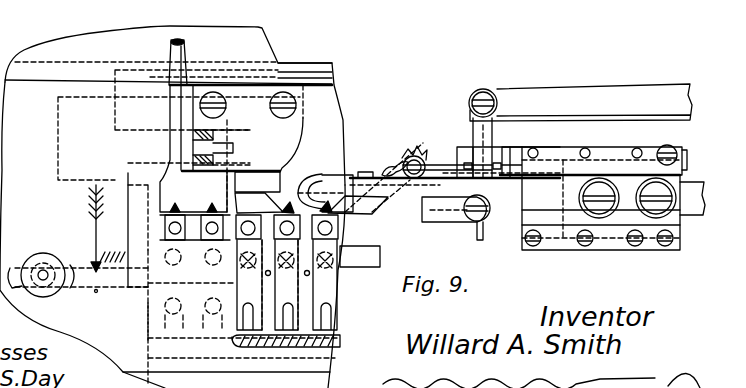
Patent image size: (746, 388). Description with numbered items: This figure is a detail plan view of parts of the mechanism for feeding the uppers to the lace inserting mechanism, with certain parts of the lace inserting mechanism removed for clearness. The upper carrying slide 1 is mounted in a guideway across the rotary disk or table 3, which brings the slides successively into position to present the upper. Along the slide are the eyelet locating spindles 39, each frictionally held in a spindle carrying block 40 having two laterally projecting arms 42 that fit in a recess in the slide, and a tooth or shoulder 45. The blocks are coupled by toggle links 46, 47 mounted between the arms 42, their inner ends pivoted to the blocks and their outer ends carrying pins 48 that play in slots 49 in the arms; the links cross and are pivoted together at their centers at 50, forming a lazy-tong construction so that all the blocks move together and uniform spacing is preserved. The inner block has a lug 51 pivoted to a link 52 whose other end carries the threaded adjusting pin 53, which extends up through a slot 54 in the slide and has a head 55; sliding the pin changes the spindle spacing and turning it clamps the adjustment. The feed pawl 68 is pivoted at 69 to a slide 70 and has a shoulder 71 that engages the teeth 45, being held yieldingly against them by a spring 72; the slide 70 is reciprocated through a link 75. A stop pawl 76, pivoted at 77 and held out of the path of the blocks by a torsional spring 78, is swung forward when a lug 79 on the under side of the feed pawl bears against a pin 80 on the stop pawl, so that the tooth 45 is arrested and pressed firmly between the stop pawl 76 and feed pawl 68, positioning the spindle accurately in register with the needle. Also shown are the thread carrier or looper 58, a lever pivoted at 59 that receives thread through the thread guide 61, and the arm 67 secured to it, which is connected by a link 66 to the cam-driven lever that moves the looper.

The slide 1 is at (302, 62).
The rotary disk or table 3 is at (230, 38).
The spindles 39 is at (163, 225).
The spindle carrying block 40 is at (165, 228).
The laterally projecting arms 42 is at (322, 328).
The tooth or shoulder 45 is at (300, 208).
The toggle link 46 is at (325, 293).
The toggle link 47 is at (337, 305).
The pins 48 is at (327, 318).
The slots 49 is at (312, 330).
The pivot 50 is at (343, 272).
The lug 51 is at (147, 303).
The link 52 is at (96, 294).
The adjusting pin 53 is at (52, 262).
The slot 54 is at (21, 270).
The head 55 is at (47, 260).
The thread carrier or looper 58 is at (441, 212).
The pivot 59 is at (482, 215).
The thread guide 61 is at (474, 240).
The link 66 is at (641, 97).
The arm 67 is at (488, 135).
The pawl 68 is at (311, 183).
The pivot 69 is at (600, 208).
The slide 70 is at (626, 215).
The shoulder 71 is at (360, 172).
The spring 72 is at (443, 168).
The link 75 is at (692, 175).
The stop pawl 76 is at (355, 212).
The pivot 77 is at (428, 162).
The torsional spring 78 is at (414, 155).
The lug 79 is at (377, 170).
The pin 80 is at (385, 200).